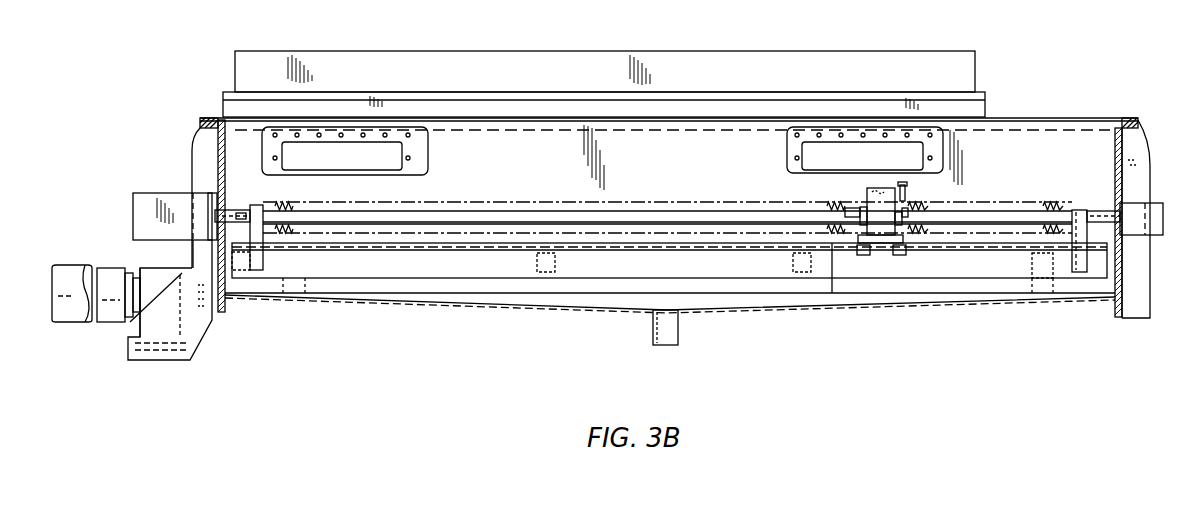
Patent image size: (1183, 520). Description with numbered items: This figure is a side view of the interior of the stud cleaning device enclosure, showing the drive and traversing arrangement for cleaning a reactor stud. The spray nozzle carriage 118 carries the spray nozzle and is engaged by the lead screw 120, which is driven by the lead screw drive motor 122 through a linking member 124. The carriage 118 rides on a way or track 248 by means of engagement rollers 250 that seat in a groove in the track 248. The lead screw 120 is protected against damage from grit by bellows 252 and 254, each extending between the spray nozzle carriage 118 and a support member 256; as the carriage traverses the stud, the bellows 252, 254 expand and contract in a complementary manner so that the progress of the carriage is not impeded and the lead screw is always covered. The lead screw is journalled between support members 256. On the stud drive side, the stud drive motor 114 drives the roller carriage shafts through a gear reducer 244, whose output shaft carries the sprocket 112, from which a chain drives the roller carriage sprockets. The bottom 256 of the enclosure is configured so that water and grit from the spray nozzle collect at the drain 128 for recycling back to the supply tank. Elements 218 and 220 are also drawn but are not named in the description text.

The sprocket 112 is at (216, 327).
The stud drive motor 114 is at (78, 322).
The spray nozzle carriage 118 is at (877, 240).
The lead screw 120 is at (1030, 222).
The lead screw drive motor 122 is at (142, 192).
The linking member 124 is at (233, 208).
The drain 128 is at (678, 330).
The bearing block 218 is at (1078, 210).
The support bracket 220 is at (1158, 240).
The gear reducer 244 is at (163, 268).
The track 248 is at (832, 253).
The engagement rollers 250 is at (910, 250).
The bellows 252 is at (532, 168).
The bellows 254 is at (983, 198).
The support member 256 is at (257, 207).